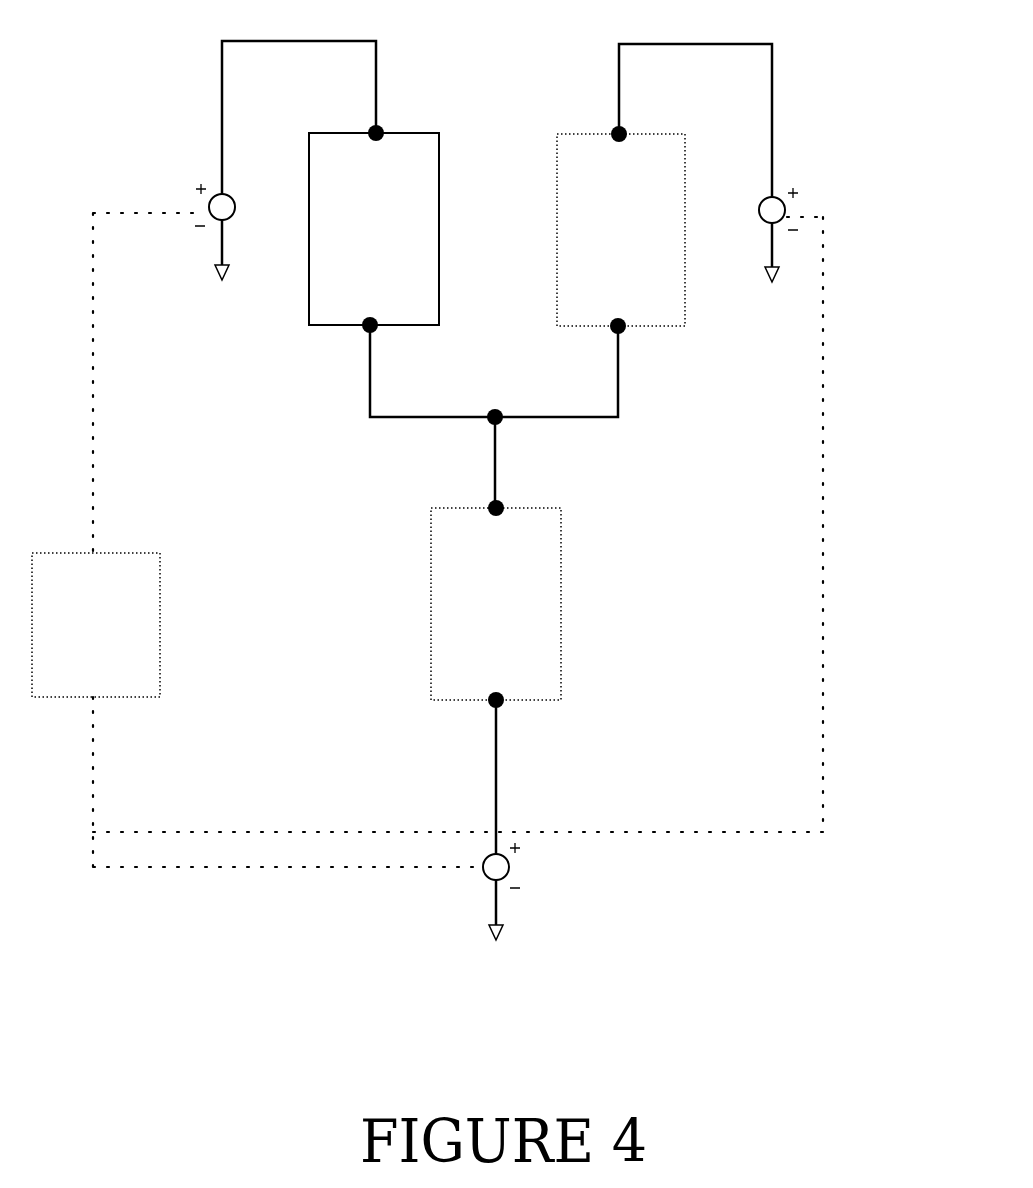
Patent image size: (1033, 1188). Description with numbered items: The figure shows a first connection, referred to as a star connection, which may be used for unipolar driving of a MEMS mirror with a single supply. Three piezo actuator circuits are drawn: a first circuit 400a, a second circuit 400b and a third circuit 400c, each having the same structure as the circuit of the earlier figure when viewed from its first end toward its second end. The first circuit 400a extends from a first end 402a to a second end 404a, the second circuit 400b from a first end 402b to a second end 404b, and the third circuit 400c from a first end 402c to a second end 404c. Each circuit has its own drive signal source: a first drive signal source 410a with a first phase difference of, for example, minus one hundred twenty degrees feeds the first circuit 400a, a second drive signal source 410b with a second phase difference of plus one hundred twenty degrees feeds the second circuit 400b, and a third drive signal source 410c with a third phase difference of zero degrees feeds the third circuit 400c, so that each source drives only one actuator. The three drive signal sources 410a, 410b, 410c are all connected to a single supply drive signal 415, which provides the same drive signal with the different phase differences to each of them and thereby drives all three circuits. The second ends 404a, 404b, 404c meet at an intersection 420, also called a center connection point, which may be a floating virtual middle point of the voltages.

The first circuit 400a is at (415, 238).
The second circuit 400b is at (663, 238).
The third circuit 400c is at (537, 614).
The first end of first circuit 402a is at (378, 131).
The first end of second circuit 402b is at (772, 104).
The first end of third circuit 402c is at (494, 509).
The second end of first circuit 404a is at (370, 325).
The second end of second circuit 404b is at (620, 328).
The second end of third circuit 404c is at (494, 701).
The first drive signal source 410a is at (209, 207).
The second drive signal source 410b is at (785, 210).
The third drive signal source 410c is at (509, 867).
The single supply drive signal 415 is at (126, 643).
The intersection 420 is at (497, 419).